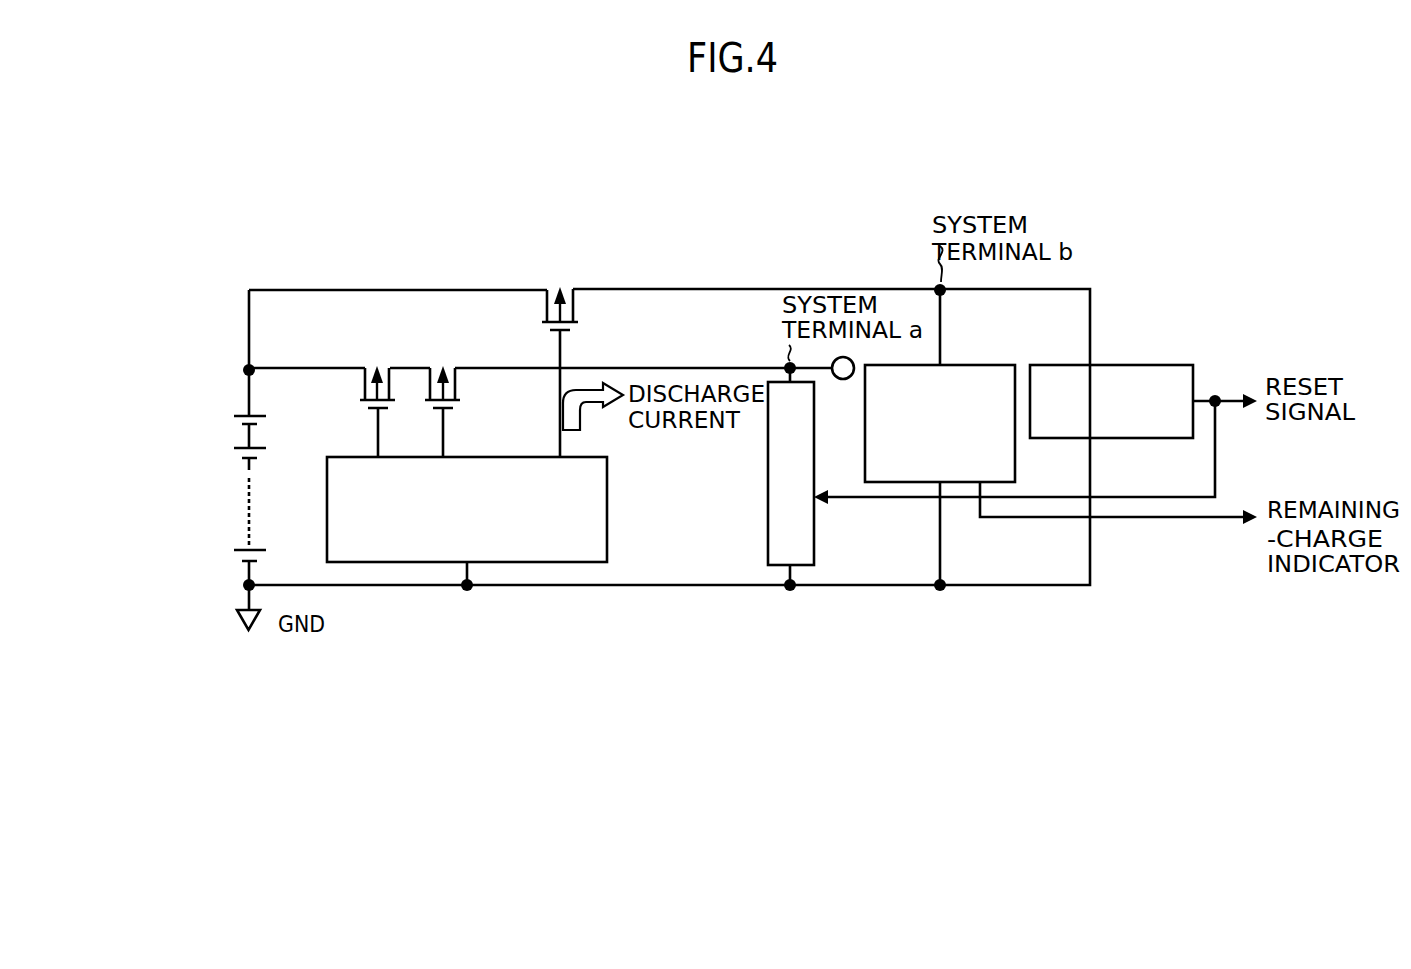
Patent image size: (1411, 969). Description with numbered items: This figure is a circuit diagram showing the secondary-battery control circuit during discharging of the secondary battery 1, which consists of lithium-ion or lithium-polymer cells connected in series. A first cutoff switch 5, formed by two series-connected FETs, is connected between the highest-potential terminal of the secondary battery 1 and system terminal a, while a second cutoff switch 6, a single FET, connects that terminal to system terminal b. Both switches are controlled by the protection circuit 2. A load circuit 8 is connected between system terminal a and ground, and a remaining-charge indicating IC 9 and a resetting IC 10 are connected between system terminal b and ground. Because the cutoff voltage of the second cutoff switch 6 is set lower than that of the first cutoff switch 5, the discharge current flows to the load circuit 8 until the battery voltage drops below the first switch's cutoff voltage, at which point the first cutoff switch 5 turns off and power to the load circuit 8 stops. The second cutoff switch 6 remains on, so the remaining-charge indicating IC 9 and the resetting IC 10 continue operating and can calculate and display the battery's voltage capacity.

The secondary battery 1 is at (241, 408).
The protection circuit 2 is at (609, 481).
The first cutoff switch 5 is at (440, 360).
The second cutoff switch 6 is at (559, 276).
The load circuit 8 is at (814, 428).
The remaining-charge indicating IC 9 is at (993, 365).
The resetting IC 10 is at (1130, 365).